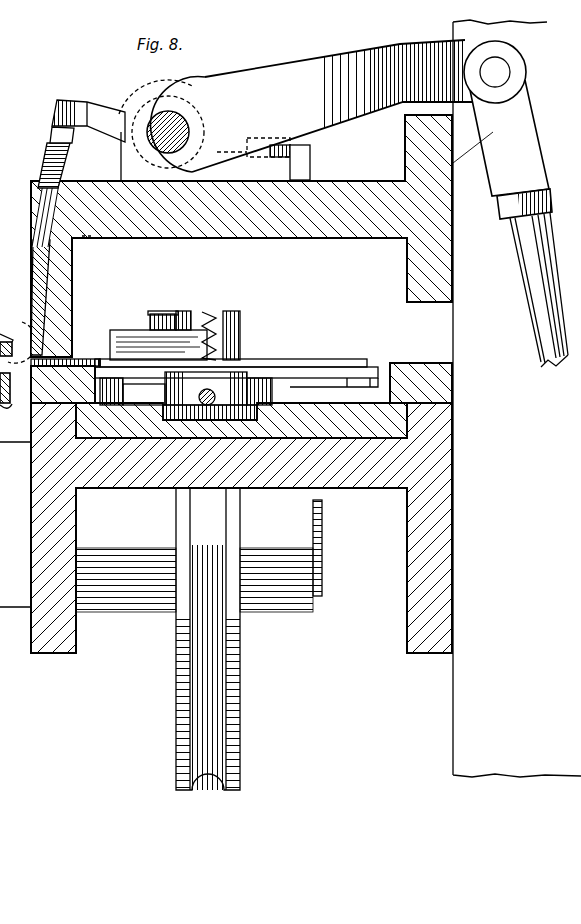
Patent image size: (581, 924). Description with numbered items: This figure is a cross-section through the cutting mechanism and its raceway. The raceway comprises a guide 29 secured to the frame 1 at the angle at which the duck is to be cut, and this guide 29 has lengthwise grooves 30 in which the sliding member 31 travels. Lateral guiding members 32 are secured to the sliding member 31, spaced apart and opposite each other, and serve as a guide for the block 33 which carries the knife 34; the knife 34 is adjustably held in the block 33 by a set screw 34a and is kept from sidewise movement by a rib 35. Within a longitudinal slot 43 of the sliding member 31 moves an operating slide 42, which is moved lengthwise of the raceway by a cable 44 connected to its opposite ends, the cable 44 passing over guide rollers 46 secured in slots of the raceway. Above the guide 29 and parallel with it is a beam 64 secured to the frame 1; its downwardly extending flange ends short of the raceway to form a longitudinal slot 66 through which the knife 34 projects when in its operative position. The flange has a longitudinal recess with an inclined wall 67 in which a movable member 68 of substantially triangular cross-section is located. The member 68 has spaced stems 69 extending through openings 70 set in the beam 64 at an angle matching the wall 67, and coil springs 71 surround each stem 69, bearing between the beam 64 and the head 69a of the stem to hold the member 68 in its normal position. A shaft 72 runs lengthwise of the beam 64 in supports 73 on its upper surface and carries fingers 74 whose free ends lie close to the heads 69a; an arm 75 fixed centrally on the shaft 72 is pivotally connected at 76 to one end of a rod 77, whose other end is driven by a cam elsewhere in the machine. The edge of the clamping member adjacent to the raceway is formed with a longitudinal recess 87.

The frame 1 is at (452, 703).
The guide 29 is at (30, 500).
The grooves 30 is at (76, 421).
The sliding member 31 is at (340, 462).
The lateral guiding members 32 is at (326, 366).
The block 33 is at (137, 328).
The knife 34 is at (99, 357).
The set screw 34a is at (162, 312).
The rib 35 is at (289, 358).
The operating slide 42 is at (160, 436).
The longitudinal slot 43 is at (272, 388).
The cable 44 is at (211, 313).
The guide rollers 46 is at (240, 345).
The beam 64 is at (316, 239).
The longitudinal slot 66 is at (98, 359).
The inclined wall 67 is at (48, 279).
The movable member 68 is at (38, 275).
The stems 69 is at (38, 217).
The heads 69a is at (74, 142).
The openings 70 is at (87, 238).
The coil springs 71 is at (60, 170).
The shaft 72 is at (186, 125).
The supports 73 is at (136, 93).
The fingers 74 is at (57, 102).
The arm 75 is at (341, 128).
The pivot 76 is at (500, 87).
The rod 77 is at (520, 276).
The longitudinal recess 87 is at (18, 360).